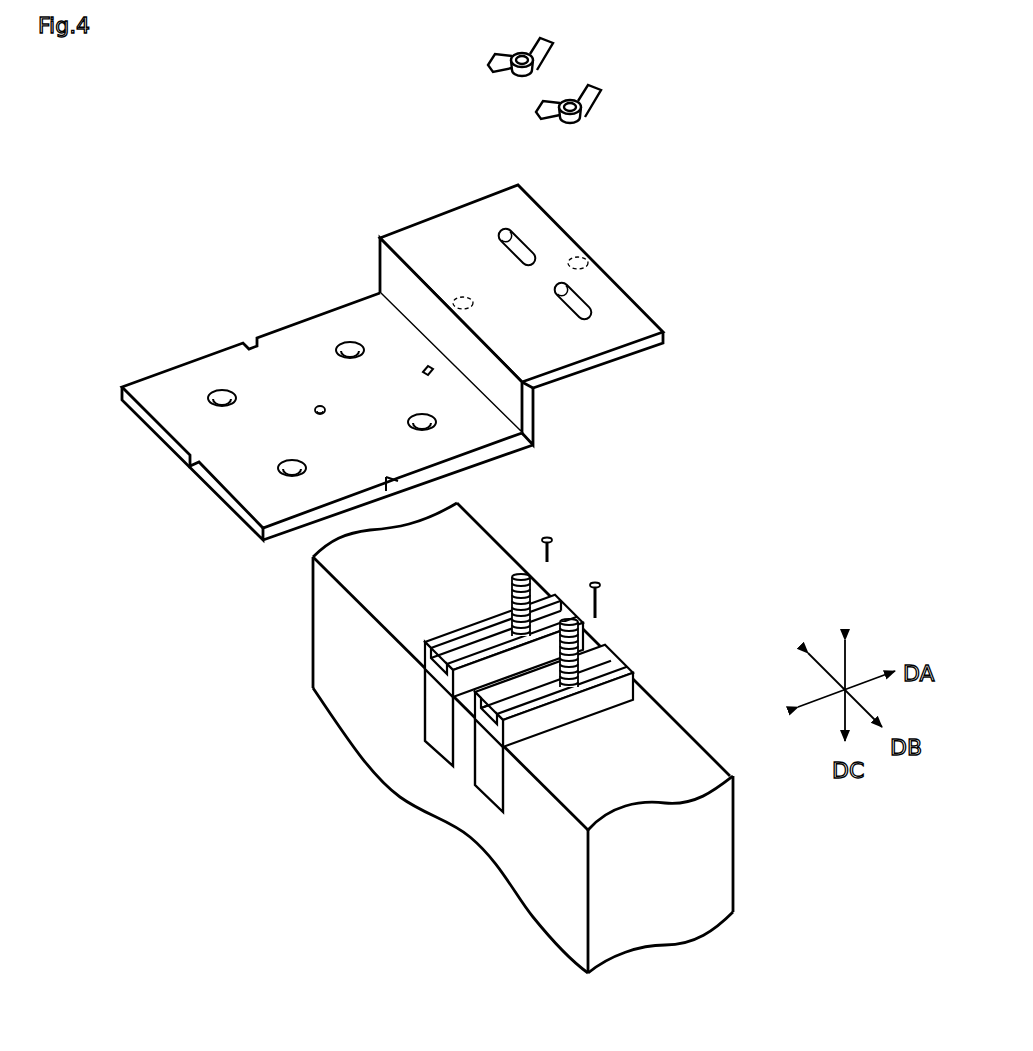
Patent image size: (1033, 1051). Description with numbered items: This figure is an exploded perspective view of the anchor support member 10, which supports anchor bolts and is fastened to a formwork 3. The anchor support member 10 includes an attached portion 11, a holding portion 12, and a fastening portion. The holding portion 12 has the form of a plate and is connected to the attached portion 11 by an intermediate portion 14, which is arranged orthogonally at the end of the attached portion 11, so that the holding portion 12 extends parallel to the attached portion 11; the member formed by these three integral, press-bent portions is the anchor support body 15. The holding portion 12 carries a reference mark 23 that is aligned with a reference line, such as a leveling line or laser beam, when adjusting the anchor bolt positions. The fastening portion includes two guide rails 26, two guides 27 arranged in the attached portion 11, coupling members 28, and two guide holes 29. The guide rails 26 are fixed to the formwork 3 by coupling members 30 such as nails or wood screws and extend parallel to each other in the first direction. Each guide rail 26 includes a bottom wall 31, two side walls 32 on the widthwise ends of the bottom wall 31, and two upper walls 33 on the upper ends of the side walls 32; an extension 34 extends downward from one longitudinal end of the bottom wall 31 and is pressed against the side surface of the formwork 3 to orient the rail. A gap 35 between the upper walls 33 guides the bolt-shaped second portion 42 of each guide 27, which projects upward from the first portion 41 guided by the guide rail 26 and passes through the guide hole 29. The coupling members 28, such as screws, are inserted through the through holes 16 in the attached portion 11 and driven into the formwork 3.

The formwork 3 is at (323, 606).
The anchor support member 10 is at (411, 342).
The attached portion 11 is at (521, 263).
The holding portion 12 is at (327, 416).
The intermediate portion 14 is at (379, 271).
The anchor support body 15 is at (663, 306).
The through holes 16 is at (463, 297).
The reference mark 23 is at (318, 406).
The guide rails 26 is at (560, 649).
The guides 27 is at (550, 610).
The coupling members 28 is at (553, 44).
The guide holes 29 is at (514, 242).
The coupling members 30 is at (546, 536).
The bottom wall 31 is at (486, 737).
The side walls 32 is at (554, 710).
The upper walls 33 is at (612, 656).
The extension 34 is at (490, 790).
The gap 35 is at (608, 668).
The first portion 41 is at (548, 715).
The second portion 42 is at (573, 620).